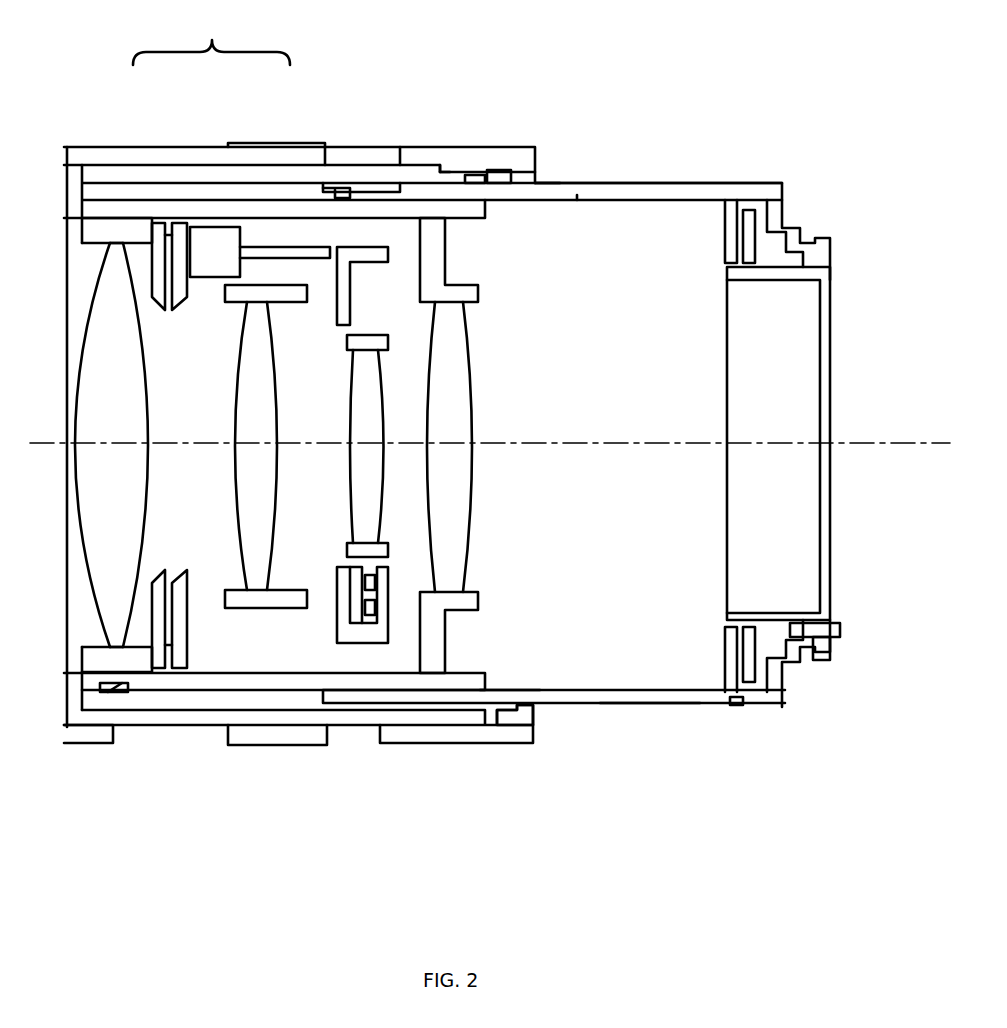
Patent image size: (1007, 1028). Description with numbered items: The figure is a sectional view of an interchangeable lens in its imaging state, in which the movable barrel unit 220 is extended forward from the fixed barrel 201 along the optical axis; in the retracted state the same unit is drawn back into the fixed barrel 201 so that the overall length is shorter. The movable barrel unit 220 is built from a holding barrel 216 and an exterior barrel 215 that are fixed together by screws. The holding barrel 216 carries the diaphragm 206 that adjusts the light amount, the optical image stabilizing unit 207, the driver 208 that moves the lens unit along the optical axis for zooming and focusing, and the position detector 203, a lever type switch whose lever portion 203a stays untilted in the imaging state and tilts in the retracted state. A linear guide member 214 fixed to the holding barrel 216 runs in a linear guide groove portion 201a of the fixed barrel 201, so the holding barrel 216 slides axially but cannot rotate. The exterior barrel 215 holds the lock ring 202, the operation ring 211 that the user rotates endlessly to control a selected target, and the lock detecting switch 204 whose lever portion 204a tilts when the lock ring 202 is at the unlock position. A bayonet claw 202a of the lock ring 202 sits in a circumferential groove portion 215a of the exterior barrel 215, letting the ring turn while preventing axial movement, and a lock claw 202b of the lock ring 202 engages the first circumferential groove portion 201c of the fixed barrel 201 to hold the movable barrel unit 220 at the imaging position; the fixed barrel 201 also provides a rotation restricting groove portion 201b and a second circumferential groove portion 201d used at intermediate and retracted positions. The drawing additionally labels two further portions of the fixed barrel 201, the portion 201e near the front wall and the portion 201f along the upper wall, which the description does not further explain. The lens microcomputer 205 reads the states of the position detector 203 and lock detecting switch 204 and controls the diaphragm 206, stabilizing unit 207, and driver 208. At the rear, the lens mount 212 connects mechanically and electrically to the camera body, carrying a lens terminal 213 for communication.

The fixed barrel 201 is at (615, 183).
The linear guide groove portion 201a is at (540, 190).
The rotation restricting groove portion 201b is at (650, 700).
The first circumferential groove portion 201c is at (510, 705).
The second circumferential groove portion 201d is at (742, 708).
The engaging hook 201e is at (333, 196).
The engaging projection 201f is at (577, 194).
The lock ring 202 is at (487, 145).
The bayonet claw 202a is at (440, 168).
The lock claw 202b is at (515, 725).
The position detector 203 is at (103, 692).
The lever portion 203a is at (112, 692).
The lock detecting switch 204 is at (488, 172).
The lever portion 204a is at (493, 180).
The lens microcomputer 205 is at (747, 230).
The diaphragm 206 is at (155, 225).
The optical image stabilizing unit 207 is at (370, 600).
The driver 208 is at (213, 230).
The operation ring 211 is at (283, 147).
The lens mount 212 is at (830, 237).
The lens terminal 213 is at (842, 622).
The linear guide member 214 is at (343, 197).
The exterior barrel 215 is at (163, 173).
The circumferential groove portion 215a is at (445, 172).
The holding barrel 216 is at (310, 207).
The movable barrel unit 220 is at (211, 38).